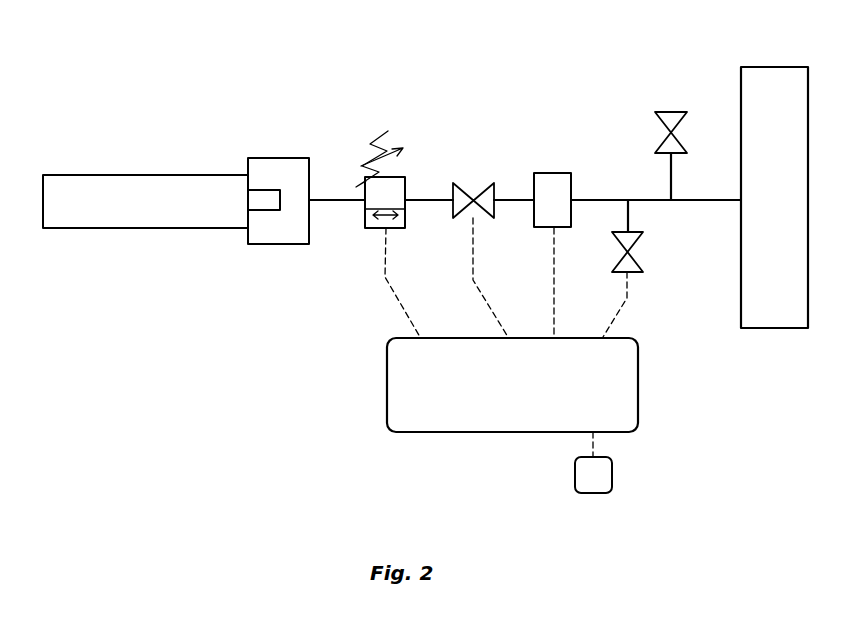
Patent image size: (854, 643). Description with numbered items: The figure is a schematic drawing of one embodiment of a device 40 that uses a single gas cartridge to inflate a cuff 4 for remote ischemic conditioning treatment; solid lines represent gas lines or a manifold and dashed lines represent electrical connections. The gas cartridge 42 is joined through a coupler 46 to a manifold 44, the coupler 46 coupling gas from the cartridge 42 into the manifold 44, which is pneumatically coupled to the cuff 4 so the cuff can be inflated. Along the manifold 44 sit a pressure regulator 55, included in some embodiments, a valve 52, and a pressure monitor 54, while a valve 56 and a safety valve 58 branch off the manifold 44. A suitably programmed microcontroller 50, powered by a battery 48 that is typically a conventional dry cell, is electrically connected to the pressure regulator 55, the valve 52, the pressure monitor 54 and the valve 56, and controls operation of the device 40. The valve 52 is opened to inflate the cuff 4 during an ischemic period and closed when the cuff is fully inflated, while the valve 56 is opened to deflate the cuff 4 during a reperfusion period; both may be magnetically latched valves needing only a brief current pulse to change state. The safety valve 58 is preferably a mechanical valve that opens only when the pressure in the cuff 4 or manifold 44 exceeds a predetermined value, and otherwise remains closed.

The cuff 4 is at (788, 192).
The device 40 is at (348, 82).
The gas cartridge 42 is at (164, 214).
The manifold 44 is at (602, 196).
The coupler 46 is at (280, 158).
The battery 48 is at (612, 476).
The microcontroller 50 is at (525, 393).
The valve 52 is at (481, 178).
The pressure monitor 54 is at (551, 173).
The pressure regulator 55 is at (381, 167).
The valve 56 is at (636, 250).
The safety valve 58 is at (673, 112).